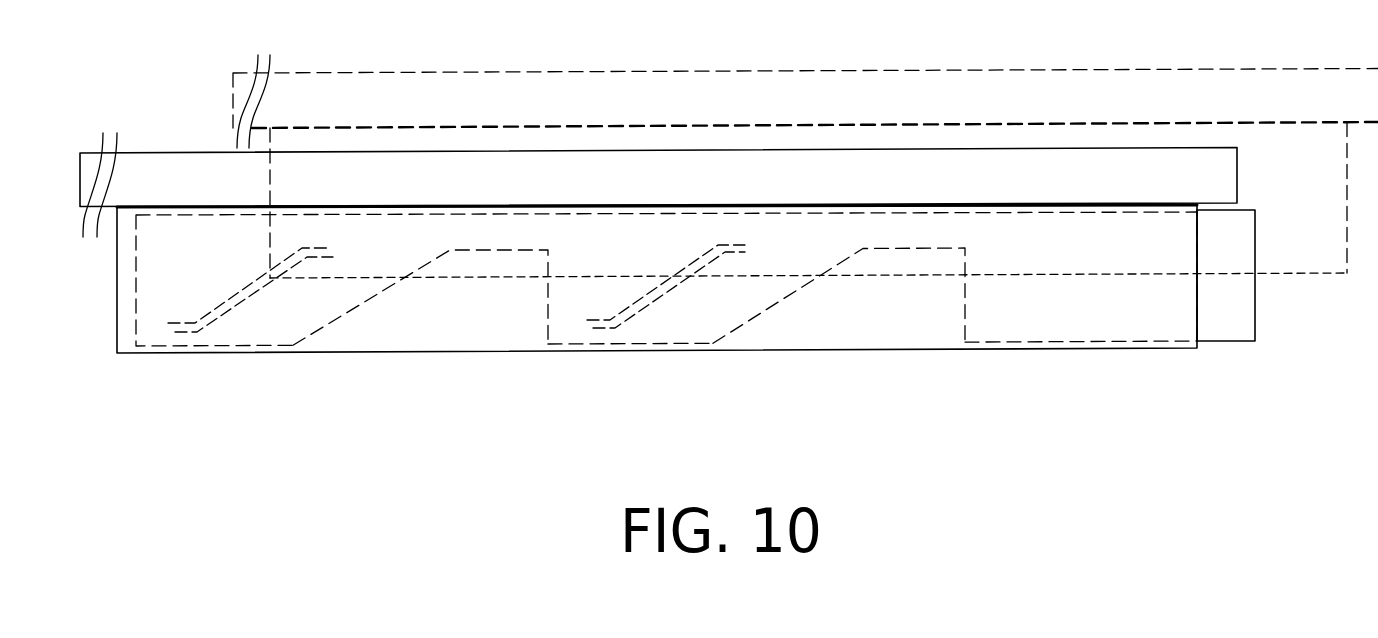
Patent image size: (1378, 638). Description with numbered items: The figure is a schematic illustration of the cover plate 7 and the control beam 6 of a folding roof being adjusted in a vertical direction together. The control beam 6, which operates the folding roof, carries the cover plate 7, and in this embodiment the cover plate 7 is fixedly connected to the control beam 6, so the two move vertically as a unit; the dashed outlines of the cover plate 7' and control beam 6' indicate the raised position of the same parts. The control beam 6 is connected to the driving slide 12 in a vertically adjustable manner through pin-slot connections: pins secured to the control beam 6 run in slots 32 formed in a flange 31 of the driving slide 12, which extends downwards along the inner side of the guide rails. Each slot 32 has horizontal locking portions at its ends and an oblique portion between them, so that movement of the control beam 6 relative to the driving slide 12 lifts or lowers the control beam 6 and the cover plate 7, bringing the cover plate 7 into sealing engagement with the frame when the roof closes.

The cover plate 7 is at (658, 176).
The control beam 6 is at (657, 262).
The upper plate in extended position 7' is at (805, 91).
The lower body in extended position 6' is at (815, 182).
The flange 31 is at (367, 307).
The slots 32 is at (218, 313).
The driving slide 12 is at (1255, 323).